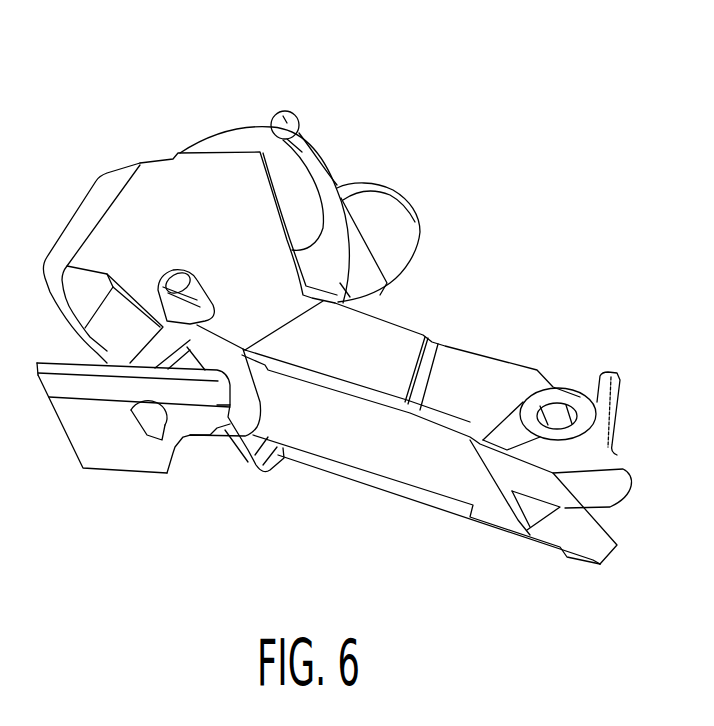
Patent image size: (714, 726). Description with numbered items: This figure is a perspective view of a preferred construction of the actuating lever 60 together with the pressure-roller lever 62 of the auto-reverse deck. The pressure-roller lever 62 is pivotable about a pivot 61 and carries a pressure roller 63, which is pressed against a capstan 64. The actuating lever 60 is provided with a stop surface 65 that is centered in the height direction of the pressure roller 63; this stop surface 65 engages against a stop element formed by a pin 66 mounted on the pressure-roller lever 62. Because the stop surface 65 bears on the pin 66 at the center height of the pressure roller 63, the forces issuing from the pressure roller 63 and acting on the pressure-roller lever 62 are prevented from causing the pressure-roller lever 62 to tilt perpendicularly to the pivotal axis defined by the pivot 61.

The actuating lever 60 is at (110, 470).
The pivot 61 is at (550, 424).
The pressure-roller lever 62 is at (388, 337).
The pressure roller 63 is at (242, 138).
The capstan 64 is at (291, 114).
The stop surface 65 is at (183, 390).
The pin 66 is at (172, 288).